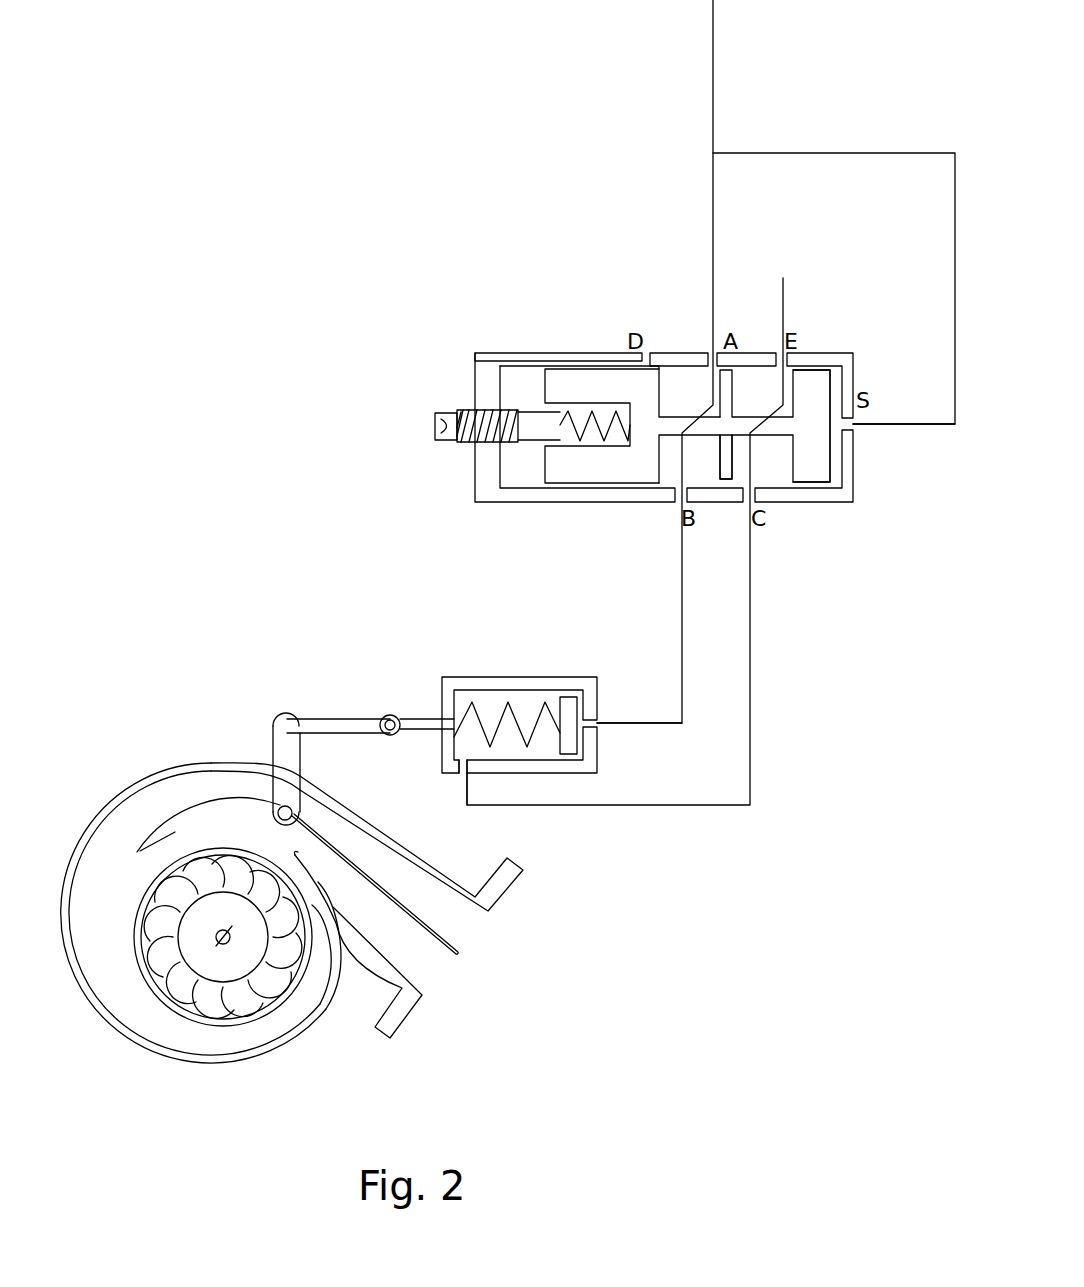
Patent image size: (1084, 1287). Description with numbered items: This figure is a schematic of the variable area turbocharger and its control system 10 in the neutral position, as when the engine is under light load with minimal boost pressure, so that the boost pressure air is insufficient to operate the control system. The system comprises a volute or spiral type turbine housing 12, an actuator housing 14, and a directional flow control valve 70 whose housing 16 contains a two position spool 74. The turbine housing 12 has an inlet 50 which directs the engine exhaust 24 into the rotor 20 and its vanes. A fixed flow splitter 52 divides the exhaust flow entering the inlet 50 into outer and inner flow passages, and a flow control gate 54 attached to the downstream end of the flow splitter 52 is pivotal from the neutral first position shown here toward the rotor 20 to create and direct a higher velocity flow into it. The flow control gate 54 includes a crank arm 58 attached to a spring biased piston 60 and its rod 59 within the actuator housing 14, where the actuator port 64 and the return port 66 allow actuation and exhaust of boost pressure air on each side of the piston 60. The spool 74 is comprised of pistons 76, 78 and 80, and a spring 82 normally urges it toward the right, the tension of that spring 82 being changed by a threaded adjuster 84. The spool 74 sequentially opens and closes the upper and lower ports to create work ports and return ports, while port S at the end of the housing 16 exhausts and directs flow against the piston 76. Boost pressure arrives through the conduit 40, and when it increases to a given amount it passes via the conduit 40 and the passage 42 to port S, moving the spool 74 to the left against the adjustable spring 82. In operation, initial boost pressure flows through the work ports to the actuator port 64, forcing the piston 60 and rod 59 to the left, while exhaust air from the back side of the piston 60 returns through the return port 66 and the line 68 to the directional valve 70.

The turbocharger control system 10 is at (279, 642).
The turbine housing 12 is at (152, 788).
The actuator housing 14 is at (452, 682).
The housing 16 is at (493, 361).
The rotor 20 is at (213, 1005).
The engine exhaust 24 is at (432, 971).
The conduit 40 is at (713, 45).
The conduit 42 is at (795, 153).
The inlet 50 is at (472, 918).
The fixed flow splitter 52 is at (413, 923).
The flow control gate 54 is at (192, 803).
The crank arm 58 is at (293, 752).
The rod 59 is at (340, 715).
The spring biased piston 60 is at (570, 697).
The actuator port 64 is at (600, 725).
The return port 66 is at (466, 774).
The return line 68 is at (648, 806).
The directional flow control valve 70 is at (846, 552).
The two position spool 74 is at (583, 463).
The piston 76 is at (812, 398).
The piston 78 is at (727, 462).
The piston 80 is at (663, 450).
The spring 82 is at (577, 415).
The threaded adjuster 84 is at (443, 428).